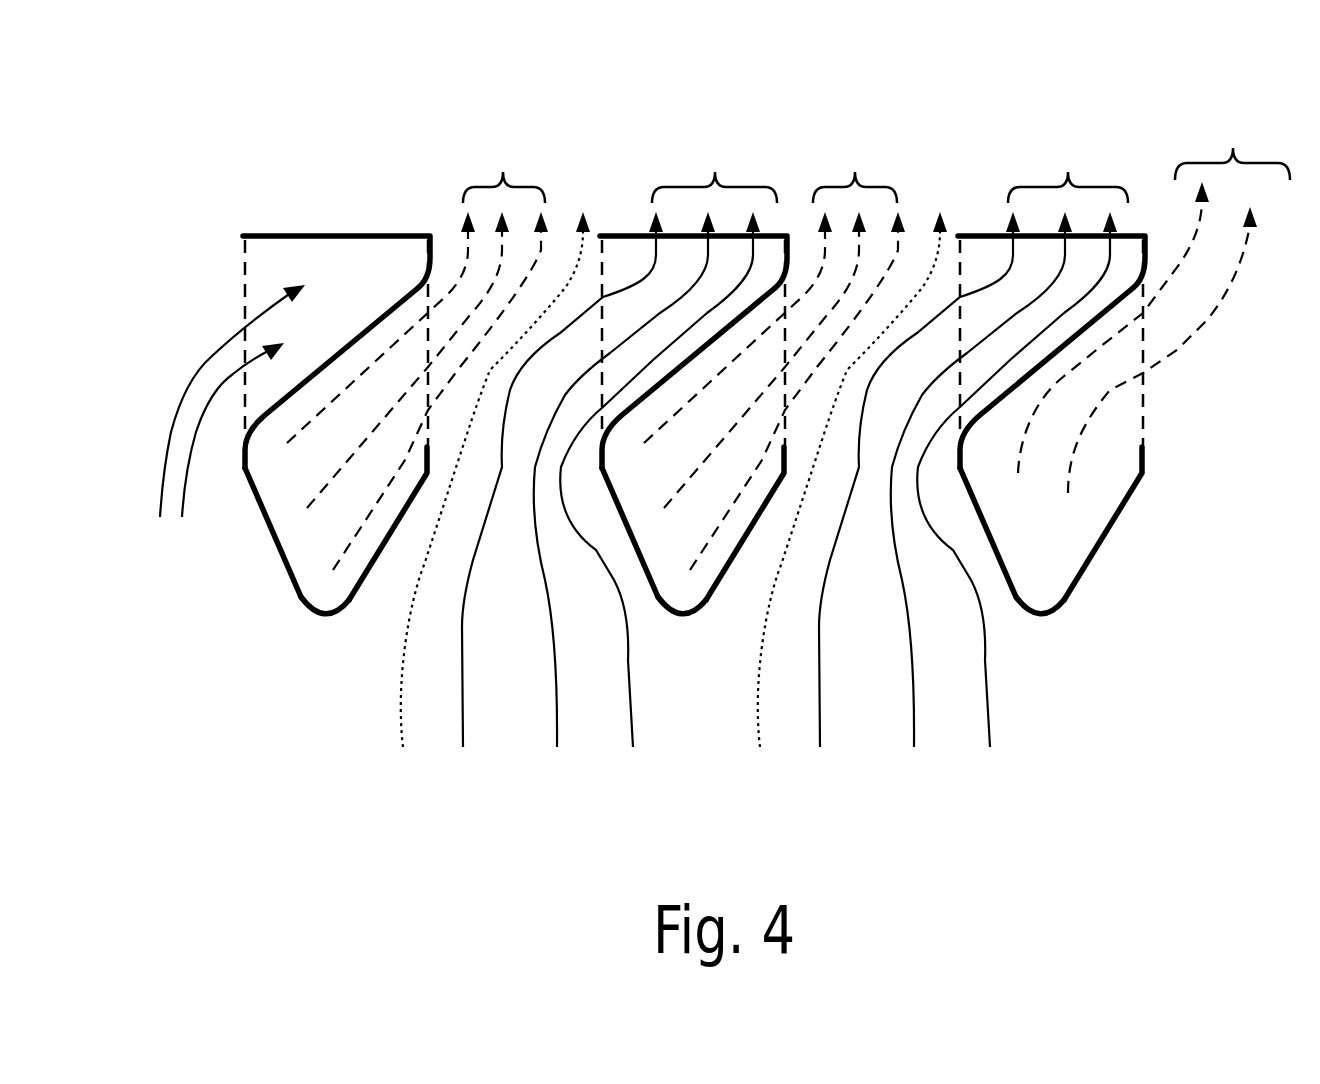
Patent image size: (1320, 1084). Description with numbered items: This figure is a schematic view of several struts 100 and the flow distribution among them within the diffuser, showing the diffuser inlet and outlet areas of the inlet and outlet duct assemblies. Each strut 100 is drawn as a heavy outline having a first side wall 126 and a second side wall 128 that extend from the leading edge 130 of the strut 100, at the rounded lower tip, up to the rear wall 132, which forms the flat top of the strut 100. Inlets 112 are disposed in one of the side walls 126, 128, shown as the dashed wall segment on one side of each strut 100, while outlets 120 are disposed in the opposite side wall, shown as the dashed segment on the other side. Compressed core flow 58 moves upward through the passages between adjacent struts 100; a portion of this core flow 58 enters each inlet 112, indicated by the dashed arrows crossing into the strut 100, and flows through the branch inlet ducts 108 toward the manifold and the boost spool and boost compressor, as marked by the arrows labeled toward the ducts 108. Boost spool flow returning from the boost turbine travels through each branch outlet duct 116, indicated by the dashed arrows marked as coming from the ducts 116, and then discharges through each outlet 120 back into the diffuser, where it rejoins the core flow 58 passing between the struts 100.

The compressed core flow 58 is at (587, 205).
The strut 100 is at (268, 622).
The branch inlet duct 108 is at (723, 209).
The inlet 112 is at (244, 285).
The branch outlet duct 116 is at (876, 143).
The outlet 120 is at (428, 432).
The first side wall 126 is at (256, 499).
The second side wall 128 is at (378, 568).
The leading edge 130 is at (327, 619).
The rear wall 132 is at (310, 236).